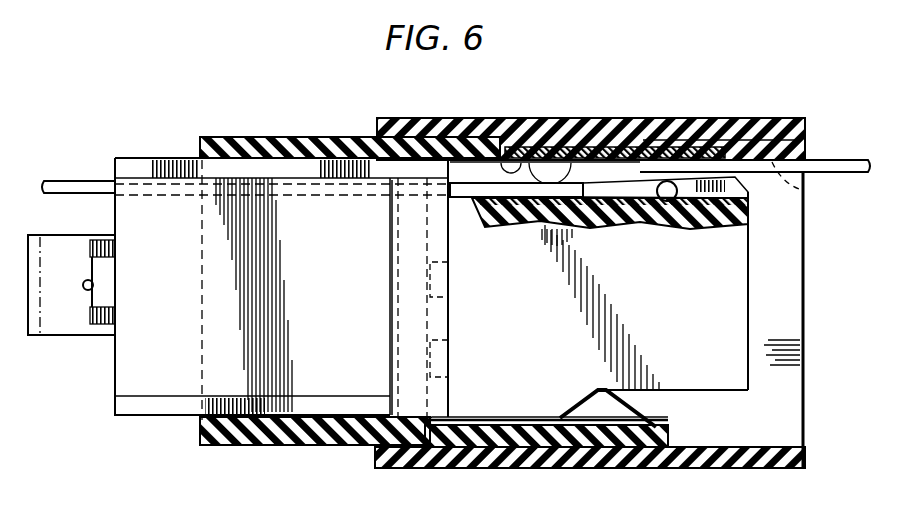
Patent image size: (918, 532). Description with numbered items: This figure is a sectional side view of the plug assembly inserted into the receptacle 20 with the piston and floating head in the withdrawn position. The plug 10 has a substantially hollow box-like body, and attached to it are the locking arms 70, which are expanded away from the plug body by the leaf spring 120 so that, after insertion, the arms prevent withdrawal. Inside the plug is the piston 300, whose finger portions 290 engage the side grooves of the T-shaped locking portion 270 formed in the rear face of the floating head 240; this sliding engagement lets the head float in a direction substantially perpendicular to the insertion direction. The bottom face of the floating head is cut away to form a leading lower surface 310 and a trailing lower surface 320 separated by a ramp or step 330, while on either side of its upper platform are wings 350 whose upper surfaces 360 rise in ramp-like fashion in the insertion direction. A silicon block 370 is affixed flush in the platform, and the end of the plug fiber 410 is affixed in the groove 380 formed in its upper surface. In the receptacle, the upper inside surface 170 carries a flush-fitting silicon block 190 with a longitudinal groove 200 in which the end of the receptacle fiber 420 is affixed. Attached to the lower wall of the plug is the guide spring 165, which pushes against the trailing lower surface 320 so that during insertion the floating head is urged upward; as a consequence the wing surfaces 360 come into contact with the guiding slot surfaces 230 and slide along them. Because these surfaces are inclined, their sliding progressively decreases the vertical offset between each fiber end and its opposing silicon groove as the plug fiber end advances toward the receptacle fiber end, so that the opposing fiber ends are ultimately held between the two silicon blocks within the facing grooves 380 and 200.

The plug 10 is at (297, 440).
The receptacle 20 is at (414, 118).
The locking arms 70 is at (69, 235).
The leaf spring 120 is at (90, 312).
The guide spring 165 is at (648, 408).
The upper inside surface 170 is at (497, 118).
The silicon block 190 is at (632, 143).
The longitudinal groove 200 is at (528, 137).
The slot surface 230 is at (813, 192).
The floating head 240 is at (737, 292).
The T-shaped locking portion 270 is at (392, 283).
The finger portions 290 is at (460, 283).
The piston 300 is at (153, 386).
The leading lower surface 310 is at (742, 392).
The trailing lower surface 320 is at (508, 416).
The ramp or step 330 is at (561, 416).
The wings 350 is at (707, 124).
The upper surfaces of wings 360 is at (594, 180).
The silicon block 370 is at (607, 224).
The groove 380 is at (675, 205).
The plug fiber 410 is at (78, 180).
The receptacle fiber 420 is at (840, 158).